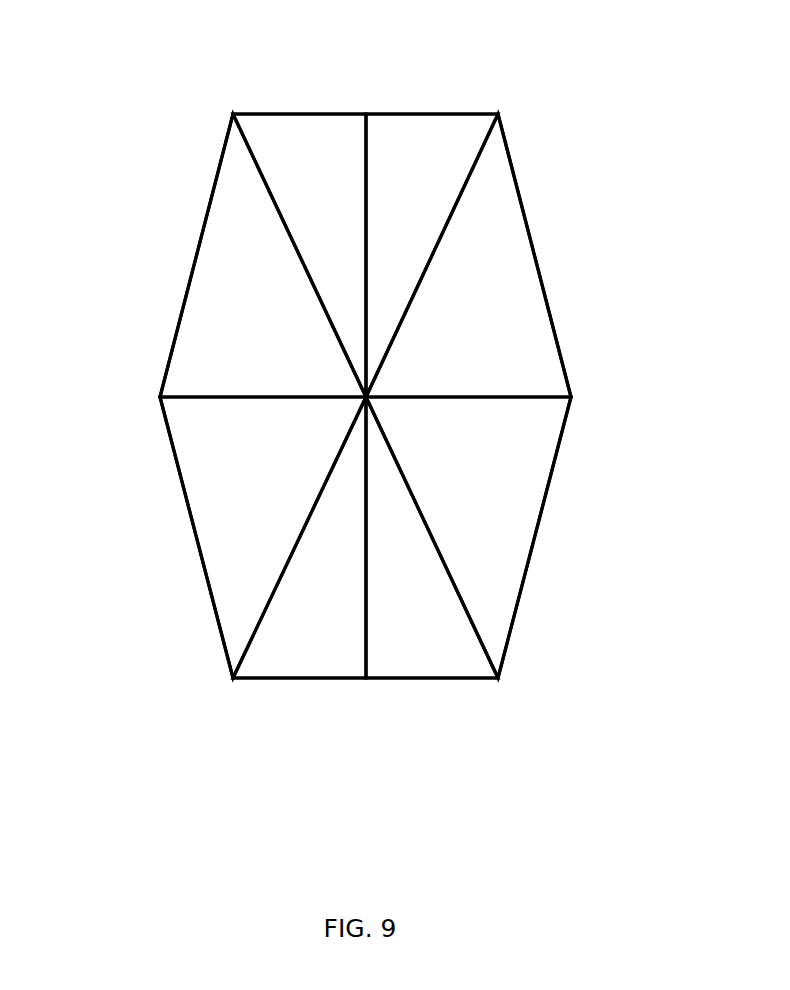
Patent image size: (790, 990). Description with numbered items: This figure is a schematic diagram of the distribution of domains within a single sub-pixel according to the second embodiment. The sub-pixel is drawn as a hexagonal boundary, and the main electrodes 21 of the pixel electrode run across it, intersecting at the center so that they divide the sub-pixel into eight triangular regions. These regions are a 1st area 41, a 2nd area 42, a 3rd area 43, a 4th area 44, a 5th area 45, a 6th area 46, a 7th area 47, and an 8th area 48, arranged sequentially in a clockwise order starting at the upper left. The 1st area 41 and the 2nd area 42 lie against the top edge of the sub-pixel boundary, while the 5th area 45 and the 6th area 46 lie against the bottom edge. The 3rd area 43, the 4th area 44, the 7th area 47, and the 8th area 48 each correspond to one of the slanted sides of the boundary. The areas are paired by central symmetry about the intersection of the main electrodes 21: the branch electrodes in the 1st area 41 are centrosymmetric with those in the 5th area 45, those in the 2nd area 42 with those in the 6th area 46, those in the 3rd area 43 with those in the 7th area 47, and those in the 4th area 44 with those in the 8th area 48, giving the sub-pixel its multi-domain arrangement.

The main electrode 21 is at (250, 142).
The 1st area 41 is at (323, 152).
The 2nd area 42 is at (443, 135).
The 3rd area 43 is at (522, 285).
The 4th area 44 is at (520, 493).
The 5th area 45 is at (432, 660).
The 6th area 46 is at (305, 655).
The 7th area 47 is at (208, 487).
The 8th area 48 is at (222, 280).